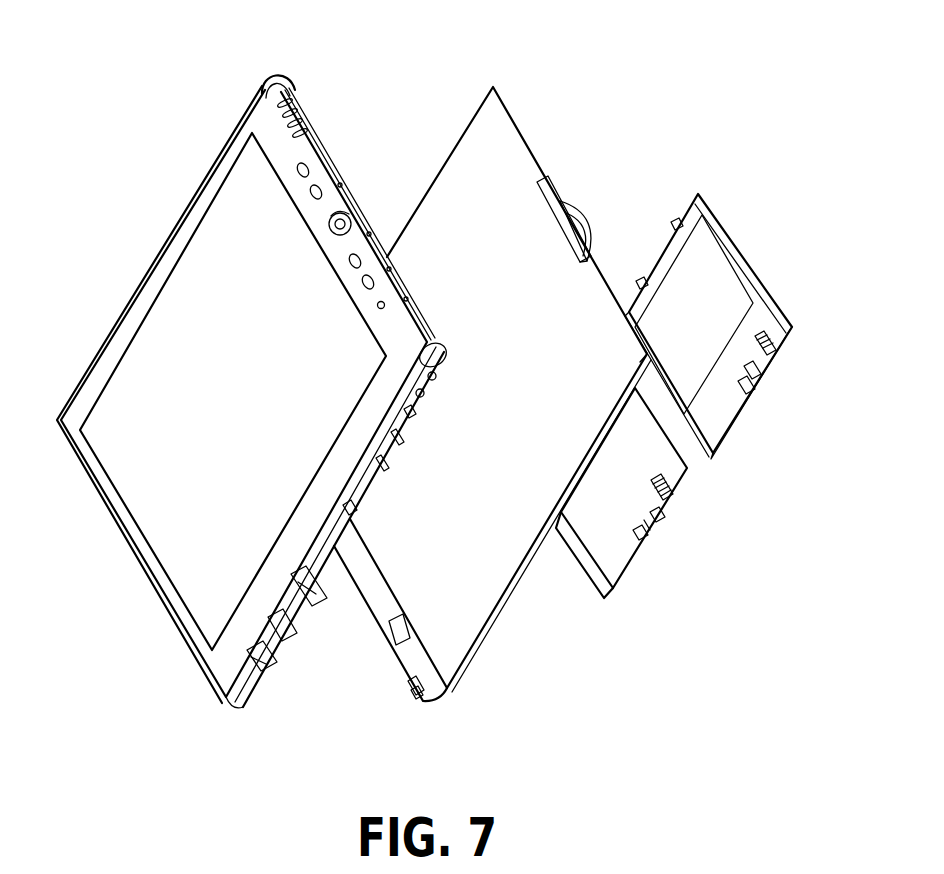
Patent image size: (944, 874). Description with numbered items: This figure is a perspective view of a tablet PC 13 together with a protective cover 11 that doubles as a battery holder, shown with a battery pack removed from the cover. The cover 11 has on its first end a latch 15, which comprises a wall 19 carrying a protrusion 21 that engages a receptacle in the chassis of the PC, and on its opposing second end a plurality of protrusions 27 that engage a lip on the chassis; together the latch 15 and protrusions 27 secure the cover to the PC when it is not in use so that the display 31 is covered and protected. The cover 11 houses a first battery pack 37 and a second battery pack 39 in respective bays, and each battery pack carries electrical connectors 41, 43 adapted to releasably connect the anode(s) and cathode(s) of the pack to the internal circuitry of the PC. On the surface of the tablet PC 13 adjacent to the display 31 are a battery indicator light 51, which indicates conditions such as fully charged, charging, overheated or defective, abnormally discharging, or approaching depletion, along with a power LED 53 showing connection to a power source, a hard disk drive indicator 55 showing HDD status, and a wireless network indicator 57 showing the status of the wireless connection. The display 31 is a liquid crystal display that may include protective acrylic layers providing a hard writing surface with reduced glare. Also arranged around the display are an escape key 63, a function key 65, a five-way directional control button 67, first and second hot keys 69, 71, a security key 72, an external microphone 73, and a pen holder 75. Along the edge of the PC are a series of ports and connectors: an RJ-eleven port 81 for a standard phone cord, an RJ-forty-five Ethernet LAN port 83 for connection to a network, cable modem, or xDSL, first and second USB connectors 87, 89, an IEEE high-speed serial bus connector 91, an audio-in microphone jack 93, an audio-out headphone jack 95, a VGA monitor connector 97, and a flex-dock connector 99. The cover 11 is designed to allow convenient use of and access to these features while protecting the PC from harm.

The cover 11 is at (484, 589).
The tablet PC 13 is at (225, 716).
The latch 15 is at (586, 200).
The wall 19 is at (551, 187).
The protrusion 21 is at (560, 237).
The protrusions 27 is at (425, 677).
The display 31 is at (209, 408).
The first battery pack 37 is at (583, 545).
The second battery pack 39 is at (772, 306).
The electrical connector 41 is at (670, 497).
The electrical connector 43 is at (645, 533).
The battery indicator light 51 is at (293, 110).
The power LED 53 is at (291, 101).
The hard disk drive indicator 55 is at (298, 121).
The wireless network indicator 57 is at (304, 132).
The escape key 63 is at (298, 172).
The function key 65 is at (312, 196).
The 5-way directional control button 67 is at (330, 228).
The first hot key 69 is at (349, 264).
The second hot key 71 is at (363, 286).
The security key 72 is at (378, 308).
The external microphone 73 is at (376, 409).
The pen holder 75 is at (281, 78).
The RJ-11 port 81 is at (268, 658).
The RJ-45 Ethernet LAN port 83 is at (289, 631).
The first USB connector 87 is at (385, 463).
The second USB connector 89 is at (399, 438).
The IEEE 1394 connector 91 is at (412, 413).
The audio-in jack 93 is at (422, 394).
The audio-out jack 95 is at (434, 378).
The VGA monitor connector 97 is at (314, 585).
The flex-dock connector 99 is at (352, 510).